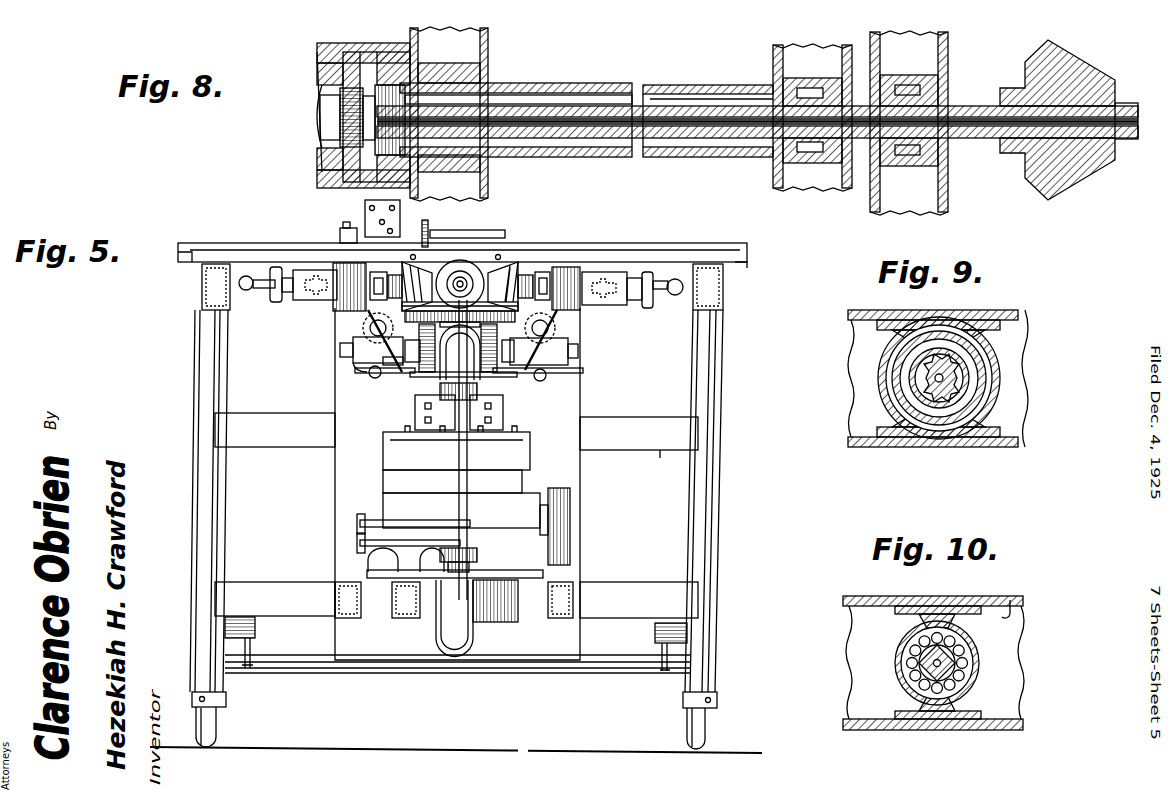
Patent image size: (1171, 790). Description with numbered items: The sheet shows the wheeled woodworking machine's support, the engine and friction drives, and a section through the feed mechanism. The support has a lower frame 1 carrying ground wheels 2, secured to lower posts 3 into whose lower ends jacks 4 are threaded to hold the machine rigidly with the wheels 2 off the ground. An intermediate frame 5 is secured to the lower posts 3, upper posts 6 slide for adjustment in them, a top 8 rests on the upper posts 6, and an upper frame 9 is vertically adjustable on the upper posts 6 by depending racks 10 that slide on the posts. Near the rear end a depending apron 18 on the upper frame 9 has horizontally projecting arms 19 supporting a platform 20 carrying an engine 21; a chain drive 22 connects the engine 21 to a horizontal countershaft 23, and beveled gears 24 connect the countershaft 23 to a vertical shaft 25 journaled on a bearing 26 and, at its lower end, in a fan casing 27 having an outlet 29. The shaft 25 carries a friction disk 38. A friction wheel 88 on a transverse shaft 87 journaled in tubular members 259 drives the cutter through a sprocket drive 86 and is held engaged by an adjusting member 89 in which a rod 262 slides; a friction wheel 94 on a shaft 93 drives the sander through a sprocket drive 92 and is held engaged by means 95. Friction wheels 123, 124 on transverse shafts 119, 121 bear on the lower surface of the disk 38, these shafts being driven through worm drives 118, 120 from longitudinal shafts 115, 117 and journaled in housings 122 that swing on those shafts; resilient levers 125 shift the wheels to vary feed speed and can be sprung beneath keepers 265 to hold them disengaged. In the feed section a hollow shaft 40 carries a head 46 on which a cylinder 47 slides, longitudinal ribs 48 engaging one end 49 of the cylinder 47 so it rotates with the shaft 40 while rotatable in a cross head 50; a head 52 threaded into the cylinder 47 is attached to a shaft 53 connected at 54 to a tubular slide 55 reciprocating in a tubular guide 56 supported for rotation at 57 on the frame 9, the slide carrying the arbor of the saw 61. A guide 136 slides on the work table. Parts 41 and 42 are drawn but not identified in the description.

In FIG. 5, the lower frame 1 is at (243, 590).
In FIG. 5, the ground wheels 2 is at (210, 746).
In FIG. 5, the lower posts 3 is at (195, 650).
In FIG. 5, the jacks 4 is at (226, 700).
In FIG. 5, the intermediate frame 5 is at (665, 463).
In FIG. 5, the upper posts 6 is at (198, 366).
In FIG. 5, the top 8 is at (650, 272).
In FIG. 8, the upper frame 9 is at (948, 48).
In FIG. 5, the upper frame 9 is at (202, 300).
In FIG. 8, the depending racks 10 is at (815, 200).
In FIG. 5, the depending apron 18 is at (560, 467).
In FIG. 5, the horizontally projecting arms 19 is at (348, 618).
In FIG. 5, the platform 20 is at (540, 580).
In FIG. 5, the engine 21 is at (405, 450).
In FIG. 5, the chain drive 22 is at (357, 539).
In FIG. 5, the horizontal countershaft 23 is at (402, 538).
In FIG. 5, the beveled gears 24 is at (478, 555).
In FIG. 5, the vertical shaft 25 is at (462, 480).
In FIG. 5, the bearing 26 is at (492, 393).
In FIG. 5, the fan casing 27 is at (486, 622).
In FIG. 5, the outlet 29 is at (408, 618).
In FIG. 5, the friction disk 38 is at (362, 320).
In FIG. 8, the hollow shaft 40 is at (985, 139).
In FIG. 5, the hollow shaft 40 is at (470, 262).
In FIG. 9, the hollow shaft 40 is at (925, 385).
In FIG. 10, the hollow shaft 40 is at (918, 672).
In FIG. 8, the shaft end 41 is at (1128, 141).
In FIG. 5, the shaft end 41 is at (485, 270).
In FIG. 8, the bevel gear 42 is at (1085, 66).
In FIG. 5, the bevel gear 42 is at (502, 280).
In FIG. 8, the head 46 is at (447, 95).
In FIG. 9, the head 46 is at (893, 352).
In FIG. 8, the cylinder 47 is at (720, 86).
In FIG. 9, the cylinder 47 is at (965, 375).
In FIG. 8, the longitudinal ribs 48 is at (585, 92).
In FIG. 9, the longitudinal ribs 48 is at (930, 378).
In FIG. 10, the longitudinal ribs 48 is at (931, 695).
In FIG. 8, the end of the cylinder 49 is at (790, 152).
In FIG. 10, the end of the cylinder 49 is at (965, 665).
In FIG. 8, the cross head 50 is at (487, 48).
In FIG. 9, the cross head 50 is at (1010, 313).
In FIG. 10, the cross head 50 is at (1015, 606).
In FIG. 8, the head 52 is at (352, 52).
In FIG. 8, the shaft 53 is at (322, 112).
In FIG. 8, the connection 54 is at (340, 100).
In FIG. 8, the tubular slide 55 is at (322, 176).
In FIG. 8, the tubular guide 56 is at (332, 45).
In FIG. 8, the rotary support 57 is at (401, 107).
In FIG. 5, the saw 61 is at (430, 230).
In FIG. 5, the sprocket drive 86 is at (615, 272).
In FIG. 5, the transverse shaft 87 is at (575, 278).
In FIG. 5, the friction wheel 88 is at (562, 275).
In FIG. 5, the adjusting member 89 is at (648, 300).
In FIG. 5, the sprocket drive 92 is at (345, 270).
In FIG. 5, the shaft 93 is at (355, 263).
In FIG. 5, the friction wheel 94 is at (463, 283).
In FIG. 5, the means for maintaining the friction wheel engaged 95 is at (247, 291).
In FIG. 5, the longitudinal shaft 115 is at (355, 330).
In FIG. 5, the longitudinal shaft 117 is at (556, 326).
In FIG. 5, the worm drive 118 is at (369, 379).
In FIG. 5, the transverse shaft 119 is at (395, 374).
In FIG. 5, the worm drive 120 is at (546, 352).
In FIG. 5, the transverse shaft 121 is at (547, 378).
In FIG. 5, the housings 122 is at (352, 346).
In FIG. 5, the friction wheel 123 is at (412, 378).
In FIG. 5, the friction wheel 124 is at (505, 380).
In FIG. 5, the levers 125 is at (365, 376).
In FIG. 5, the guide 136 is at (400, 212).
In FIG. 5, the tubular members 259 is at (632, 280).
In FIG. 5, the rod 262 is at (668, 285).
In FIG. 5, the keepers 265 is at (365, 445).